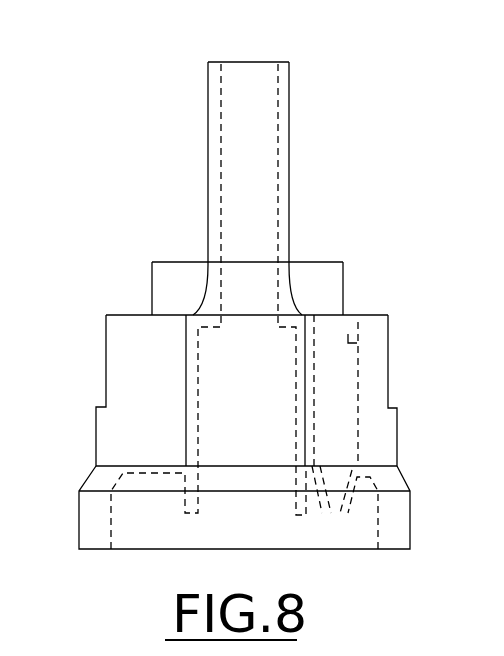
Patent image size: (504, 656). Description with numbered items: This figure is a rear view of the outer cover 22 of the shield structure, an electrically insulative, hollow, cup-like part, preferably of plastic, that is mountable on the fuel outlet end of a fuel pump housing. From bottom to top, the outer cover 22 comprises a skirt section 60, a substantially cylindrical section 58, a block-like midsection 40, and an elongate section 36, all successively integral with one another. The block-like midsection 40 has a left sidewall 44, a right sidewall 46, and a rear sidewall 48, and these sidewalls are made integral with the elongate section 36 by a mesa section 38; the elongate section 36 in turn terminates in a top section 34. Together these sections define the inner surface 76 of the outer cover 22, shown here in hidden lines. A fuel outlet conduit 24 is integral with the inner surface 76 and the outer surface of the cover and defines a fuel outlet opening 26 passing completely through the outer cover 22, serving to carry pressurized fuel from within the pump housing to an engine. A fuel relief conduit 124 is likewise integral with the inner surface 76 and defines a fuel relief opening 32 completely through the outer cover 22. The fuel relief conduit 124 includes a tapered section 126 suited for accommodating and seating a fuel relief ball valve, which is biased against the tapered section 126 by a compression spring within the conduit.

The outer cover 22 is at (110, 74).
The fuel outlet opening 26 is at (256, 56).
The fuel outlet conduit 24 is at (284, 106).
The top section 34 is at (170, 262).
The fuel relief opening 32 is at (326, 298).
The elongate section 36 is at (146, 264).
The mesa section 38 is at (121, 315).
The rear sidewall 48 is at (137, 330).
The block-like midsection 40 is at (96, 348).
The right sidewall 46 is at (105, 378).
The left sidewall 44 is at (389, 380).
The cylindrical section 58 is at (86, 428).
The skirt section 60 is at (66, 522).
The inner surface 76 is at (112, 524).
The fuel relief conduit 124 is at (360, 330).
The tapered section 126 is at (333, 516).